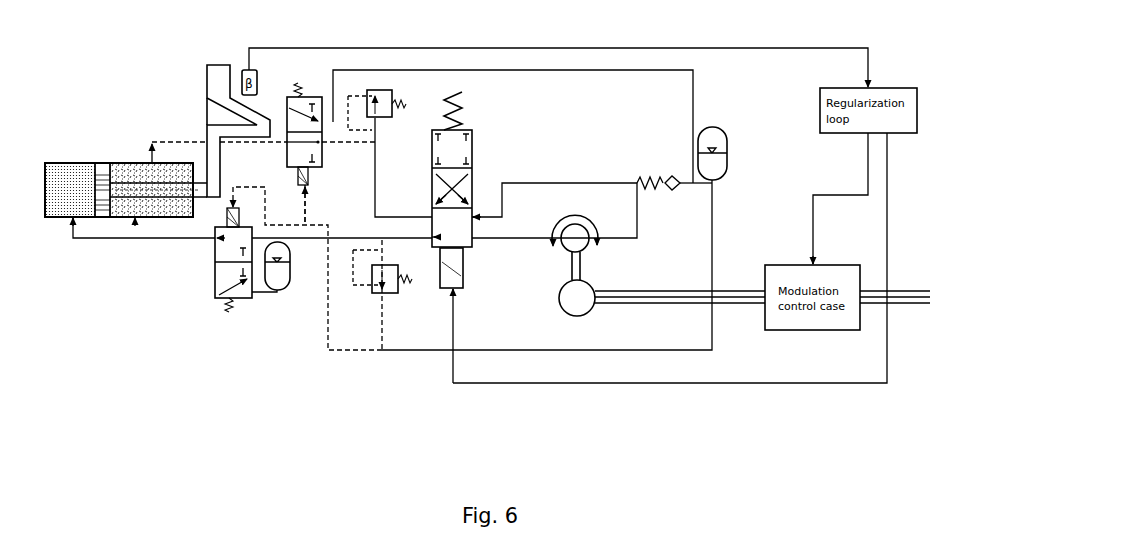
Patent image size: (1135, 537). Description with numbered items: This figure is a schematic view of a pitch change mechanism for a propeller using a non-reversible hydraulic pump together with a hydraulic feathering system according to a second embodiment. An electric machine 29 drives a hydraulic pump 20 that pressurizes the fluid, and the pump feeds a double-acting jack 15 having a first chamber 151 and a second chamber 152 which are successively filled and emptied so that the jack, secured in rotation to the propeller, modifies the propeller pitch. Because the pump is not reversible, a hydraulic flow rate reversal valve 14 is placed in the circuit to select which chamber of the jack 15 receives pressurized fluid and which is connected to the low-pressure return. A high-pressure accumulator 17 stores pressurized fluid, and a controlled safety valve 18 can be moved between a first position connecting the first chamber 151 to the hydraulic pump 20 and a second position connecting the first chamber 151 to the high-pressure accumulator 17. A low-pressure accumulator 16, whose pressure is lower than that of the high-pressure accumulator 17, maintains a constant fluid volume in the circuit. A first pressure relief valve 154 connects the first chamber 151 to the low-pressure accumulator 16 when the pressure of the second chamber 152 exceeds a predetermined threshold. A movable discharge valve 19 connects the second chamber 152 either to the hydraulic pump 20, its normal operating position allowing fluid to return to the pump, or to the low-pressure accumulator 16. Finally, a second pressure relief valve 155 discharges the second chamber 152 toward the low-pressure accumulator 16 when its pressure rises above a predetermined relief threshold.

The hydraulic flow rate reversal valve 14 is at (435, 253).
The jack 15 is at (126, 193).
The first chamber 151 is at (75, 161).
The second chamber 152 is at (132, 161).
The low-pressure accumulator 16 is at (724, 124).
The high-pressure accumulator 17 is at (281, 294).
The controlled safety valve 18 is at (220, 301).
The discharge valve 19 is at (289, 92).
The hydraulic pump 20 is at (594, 250).
The electric machine 29 is at (557, 297).
The first pressure relief valve 154 is at (375, 299).
The second pressure relief valve 155 is at (366, 88).